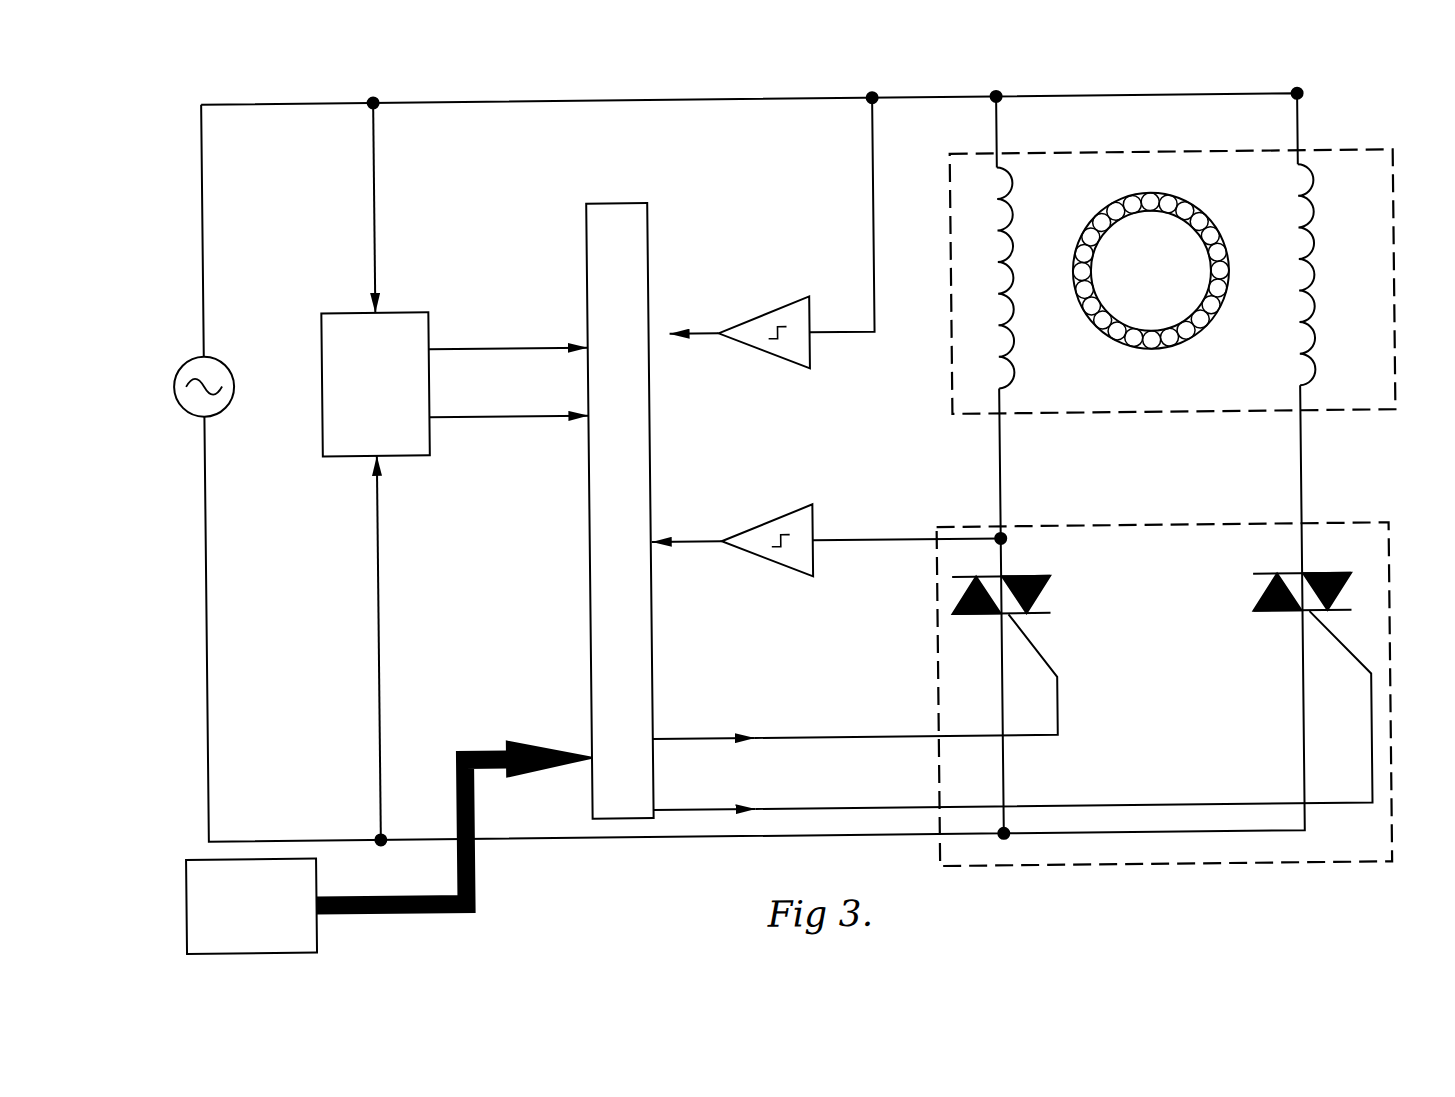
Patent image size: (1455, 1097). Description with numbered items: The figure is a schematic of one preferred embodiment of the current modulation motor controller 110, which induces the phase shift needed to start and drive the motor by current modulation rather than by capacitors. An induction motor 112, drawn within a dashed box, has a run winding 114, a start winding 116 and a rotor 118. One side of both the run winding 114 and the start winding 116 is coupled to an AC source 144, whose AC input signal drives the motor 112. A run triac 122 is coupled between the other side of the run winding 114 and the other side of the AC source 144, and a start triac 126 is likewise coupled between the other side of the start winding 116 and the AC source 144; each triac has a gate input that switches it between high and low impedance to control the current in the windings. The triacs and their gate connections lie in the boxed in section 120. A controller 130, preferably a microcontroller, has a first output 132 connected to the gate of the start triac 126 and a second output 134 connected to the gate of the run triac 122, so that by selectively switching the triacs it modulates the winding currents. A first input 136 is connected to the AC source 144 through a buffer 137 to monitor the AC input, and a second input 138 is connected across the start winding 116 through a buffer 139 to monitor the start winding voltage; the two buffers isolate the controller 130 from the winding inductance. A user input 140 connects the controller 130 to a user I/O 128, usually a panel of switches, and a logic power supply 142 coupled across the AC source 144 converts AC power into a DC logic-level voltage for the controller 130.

The current modulation motor controller 110 is at (733, 442).
The induction motor 112 is at (1180, 251).
The run winding 114 is at (1345, 274).
The start winding 116 is at (1039, 278).
The rotor 118 is at (1177, 257).
The boxed in section 120 is at (1195, 694).
The run triac 122 is at (1264, 621).
The start triac 126 is at (1034, 583).
The user I/O 128 is at (296, 904).
The controller 130 is at (655, 488).
The first output 132 is at (855, 676).
The second output 134 is at (1012, 711).
The first input 136 is at (689, 306).
The buffer 137 is at (795, 234).
The second input 138 is at (690, 512).
The buffer 139 is at (861, 517).
The user input 140 is at (453, 800).
The logic power supply 142 is at (456, 471).
The AC source 144 is at (235, 362).